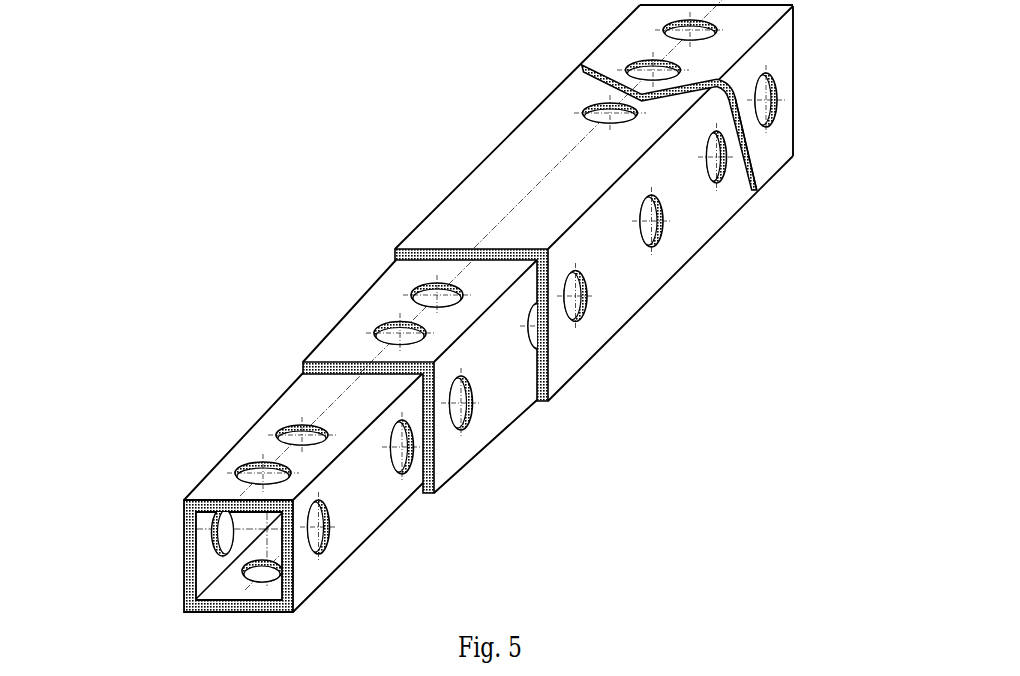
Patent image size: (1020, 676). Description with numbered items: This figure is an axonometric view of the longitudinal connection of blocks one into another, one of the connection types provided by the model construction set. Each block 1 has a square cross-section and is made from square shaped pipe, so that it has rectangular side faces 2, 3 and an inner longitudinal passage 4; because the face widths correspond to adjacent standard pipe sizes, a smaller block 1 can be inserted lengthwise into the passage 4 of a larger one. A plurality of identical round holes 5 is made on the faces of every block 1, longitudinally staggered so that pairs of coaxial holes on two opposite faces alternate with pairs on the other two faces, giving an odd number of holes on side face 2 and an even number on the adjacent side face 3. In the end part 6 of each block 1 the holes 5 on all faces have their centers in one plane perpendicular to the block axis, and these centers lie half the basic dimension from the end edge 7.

The block 1 is at (260, 440).
The side face of the block (with odd number of holes) 2 is at (587, 95).
The side face of the block (with even number of holes) 3 is at (728, 190).
The longitudinal passage inside a block 4 is at (208, 567).
The holes 5 is at (318, 542).
The end part of a block 6 is at (230, 483).
The end edge 7 is at (283, 578).